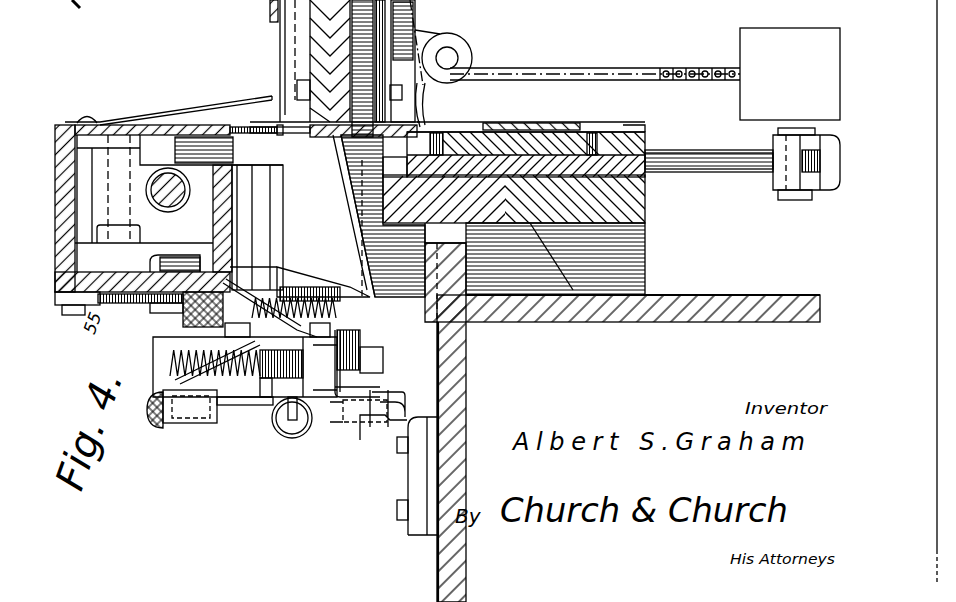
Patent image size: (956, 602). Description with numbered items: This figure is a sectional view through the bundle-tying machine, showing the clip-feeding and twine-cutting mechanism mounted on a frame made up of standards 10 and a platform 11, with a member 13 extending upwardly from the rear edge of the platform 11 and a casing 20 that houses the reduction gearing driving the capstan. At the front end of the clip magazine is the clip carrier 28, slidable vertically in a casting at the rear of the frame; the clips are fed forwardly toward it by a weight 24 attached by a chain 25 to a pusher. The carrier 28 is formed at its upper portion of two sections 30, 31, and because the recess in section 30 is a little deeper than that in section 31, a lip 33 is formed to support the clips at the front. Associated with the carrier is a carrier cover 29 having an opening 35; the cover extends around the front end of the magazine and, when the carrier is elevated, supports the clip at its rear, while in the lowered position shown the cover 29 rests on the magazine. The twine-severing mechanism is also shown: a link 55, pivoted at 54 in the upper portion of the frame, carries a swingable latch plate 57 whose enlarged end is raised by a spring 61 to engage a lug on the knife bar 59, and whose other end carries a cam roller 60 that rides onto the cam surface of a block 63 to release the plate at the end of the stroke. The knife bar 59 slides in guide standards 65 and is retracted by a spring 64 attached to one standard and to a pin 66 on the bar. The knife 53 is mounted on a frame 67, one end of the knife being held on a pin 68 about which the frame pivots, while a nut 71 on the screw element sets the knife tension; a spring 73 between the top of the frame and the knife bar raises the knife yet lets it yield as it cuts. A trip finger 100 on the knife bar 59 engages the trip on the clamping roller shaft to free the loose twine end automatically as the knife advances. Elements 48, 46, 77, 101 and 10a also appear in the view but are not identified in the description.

The member 13 is at (57, 176).
The lever 48 is at (167, 167).
The bushing 46 is at (117, 225).
The link 55 is at (188, 181).
The pivot 54 is at (75, 315).
The trip finger 100 is at (148, 266).
The spring block 77 is at (190, 313).
The spring 61 is at (307, 272).
The spring 73 is at (170, 357).
The nut 71 is at (160, 400).
The knife 53 is at (230, 405).
The frame 67 is at (240, 392).
The pin 68 is at (268, 415).
The spring 64 is at (286, 422).
The knife bar 59 is at (300, 386).
The pin 66 is at (302, 433).
The latch plate 57 is at (369, 363).
The block 63 is at (403, 392).
The cam roller 60 is at (375, 412).
The guide standards 65 is at (390, 422).
The carrier cover 29 is at (334, 135).
The lip 33 is at (360, 136).
The shaft 101 is at (383, 217).
The standards 10 is at (388, 128).
The section 30 is at (418, 125).
The opening 35 is at (485, 133).
The clip carrier 28 is at (378, 142).
The casing 20 is at (645, 145).
The chain 25 is at (583, 70).
The weight 24 is at (790, 74).
The base 10a is at (642, 190).
The platform 11 is at (463, 433).
The section 31 is at (703, 11).